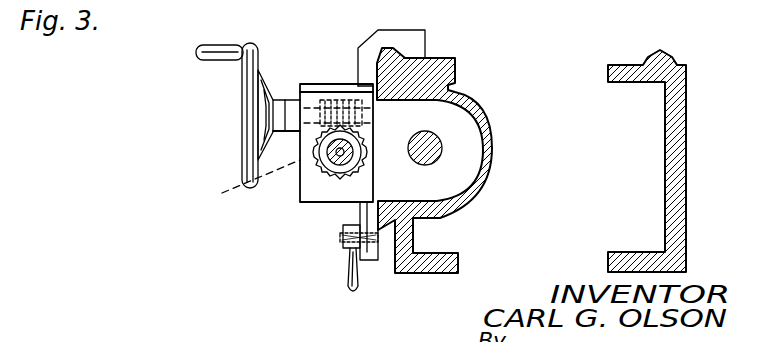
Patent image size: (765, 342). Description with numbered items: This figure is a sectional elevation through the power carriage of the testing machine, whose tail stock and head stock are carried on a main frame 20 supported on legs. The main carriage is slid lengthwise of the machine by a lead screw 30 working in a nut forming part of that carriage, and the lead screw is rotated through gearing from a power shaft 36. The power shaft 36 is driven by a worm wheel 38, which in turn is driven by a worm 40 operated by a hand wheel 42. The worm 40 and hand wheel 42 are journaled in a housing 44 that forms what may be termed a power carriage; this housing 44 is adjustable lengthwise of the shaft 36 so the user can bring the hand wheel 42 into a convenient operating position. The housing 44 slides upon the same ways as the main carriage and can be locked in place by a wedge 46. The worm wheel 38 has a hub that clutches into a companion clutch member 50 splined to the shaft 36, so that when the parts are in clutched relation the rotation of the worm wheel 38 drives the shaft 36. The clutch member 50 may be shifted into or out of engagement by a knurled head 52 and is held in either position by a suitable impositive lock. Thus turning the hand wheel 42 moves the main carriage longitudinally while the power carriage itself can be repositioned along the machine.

The main frame 20 is at (440, 65).
The lead screw 30 is at (430, 142).
The power shaft 36 is at (327, 162).
The worm wheel 38 is at (243, 182).
The worm 40 is at (340, 97).
The hand wheel 42 is at (250, 92).
The housing 44 is at (322, 196).
The wedge 46 is at (388, 237).
The clutch member 50 is at (338, 165).
The knurled head 52 is at (364, 170).